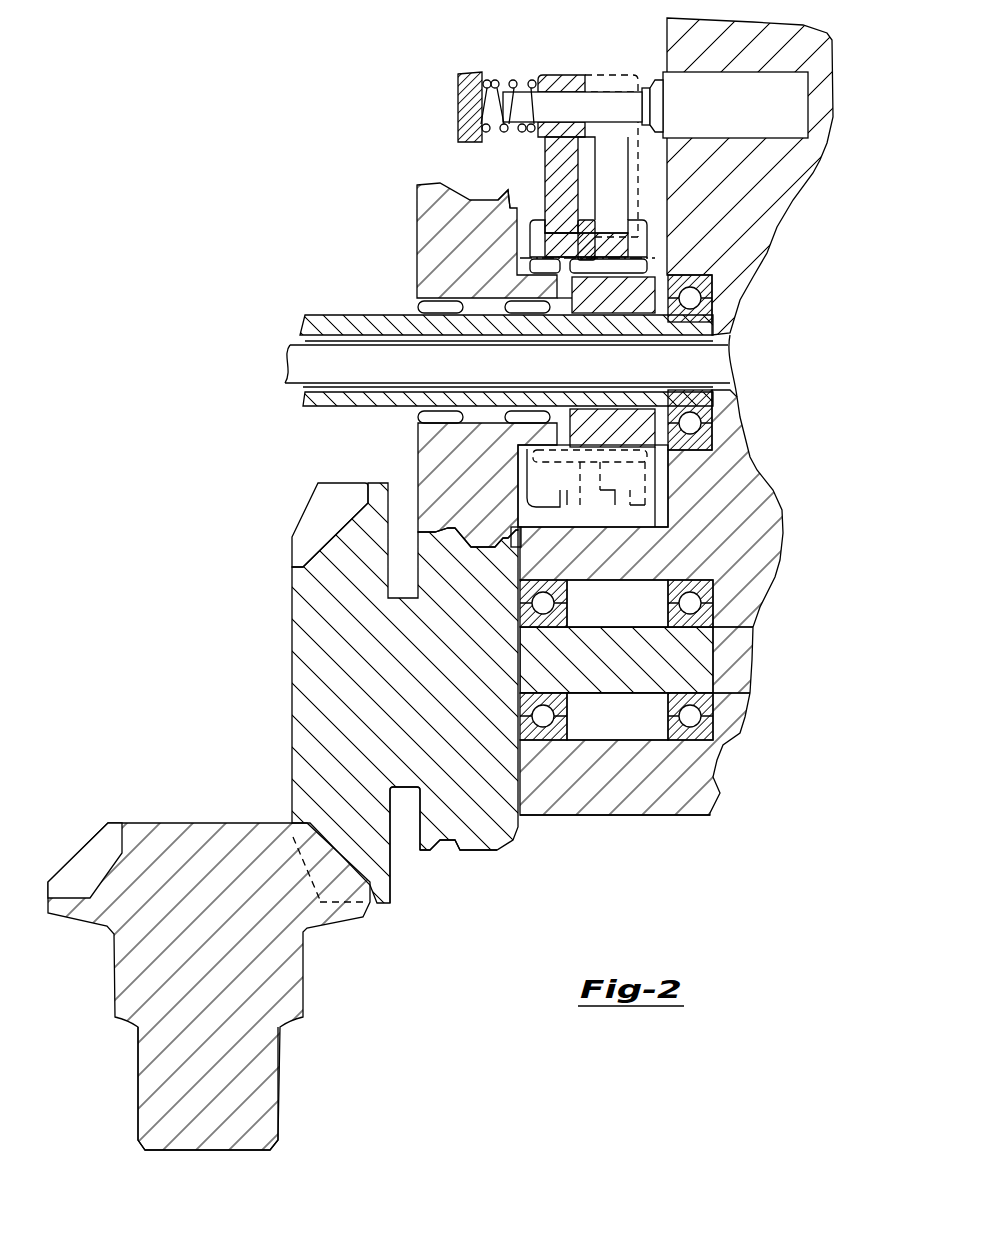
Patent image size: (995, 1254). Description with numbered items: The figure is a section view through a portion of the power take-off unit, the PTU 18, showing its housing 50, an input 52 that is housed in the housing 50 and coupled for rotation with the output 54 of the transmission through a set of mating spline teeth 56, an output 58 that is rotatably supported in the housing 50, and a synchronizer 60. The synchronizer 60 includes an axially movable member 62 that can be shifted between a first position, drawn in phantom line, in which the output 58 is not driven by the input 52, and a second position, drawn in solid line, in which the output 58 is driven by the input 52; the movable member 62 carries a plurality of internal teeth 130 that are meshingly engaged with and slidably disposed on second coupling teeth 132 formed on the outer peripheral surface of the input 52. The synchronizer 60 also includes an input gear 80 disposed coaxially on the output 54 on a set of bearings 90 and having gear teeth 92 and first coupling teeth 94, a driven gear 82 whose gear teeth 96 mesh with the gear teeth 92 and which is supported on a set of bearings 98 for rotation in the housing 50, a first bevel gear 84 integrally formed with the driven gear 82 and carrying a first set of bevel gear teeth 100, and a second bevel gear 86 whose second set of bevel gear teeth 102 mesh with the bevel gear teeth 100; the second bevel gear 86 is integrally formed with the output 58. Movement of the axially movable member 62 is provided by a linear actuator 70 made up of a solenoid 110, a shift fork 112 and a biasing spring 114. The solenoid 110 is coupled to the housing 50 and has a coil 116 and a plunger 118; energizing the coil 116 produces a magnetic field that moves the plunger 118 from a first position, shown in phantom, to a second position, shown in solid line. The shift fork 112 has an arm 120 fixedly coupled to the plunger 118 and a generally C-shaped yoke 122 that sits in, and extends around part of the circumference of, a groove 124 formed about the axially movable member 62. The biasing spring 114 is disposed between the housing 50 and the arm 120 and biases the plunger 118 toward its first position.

The PTU 18 is at (731, 828).
The housing 50 is at (713, 773).
The input 52 is at (630, 297).
The output 54 is at (340, 315).
The mating spline teeth 56 is at (668, 309).
The output 58 is at (277, 1090).
The synchronizer 60 is at (502, 187).
The axially movable member 62 is at (586, 228).
The linear actuator 70 is at (778, 92).
The input gear 80 is at (423, 478).
The driven gear 82 is at (472, 837).
The first bevel gear 84 is at (297, 585).
The second bevel gear 86 is at (77, 866).
The bearings 90 is at (423, 413).
The gear teeth 92 is at (440, 183).
The first coupling teeth 94 is at (527, 488).
The gear teeth 96 is at (430, 842).
The bearings 98 is at (713, 592).
The first set of bevel gear teeth 100 is at (303, 530).
The second set of bevel gear teeth 102 is at (145, 823).
The solenoid 110 is at (753, 127).
The shift fork 112 is at (572, 156).
The biasing spring 114 is at (522, 80).
The coil 116 is at (672, 118).
The plunger 118 is at (624, 90).
The arm 120 is at (577, 75).
The yoke 122 is at (557, 225).
The groove 124 is at (560, 252).
The internal teeth 130 is at (563, 262).
The second coupling teeth 132 is at (650, 453).